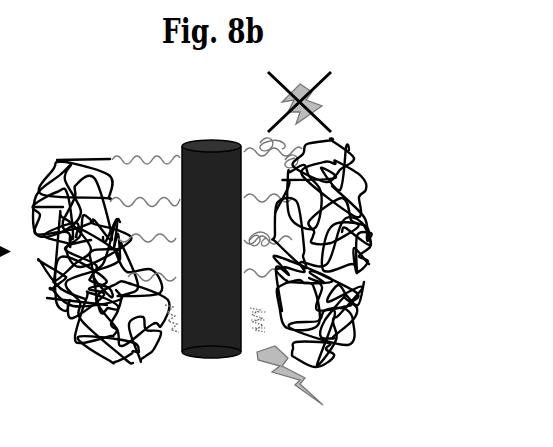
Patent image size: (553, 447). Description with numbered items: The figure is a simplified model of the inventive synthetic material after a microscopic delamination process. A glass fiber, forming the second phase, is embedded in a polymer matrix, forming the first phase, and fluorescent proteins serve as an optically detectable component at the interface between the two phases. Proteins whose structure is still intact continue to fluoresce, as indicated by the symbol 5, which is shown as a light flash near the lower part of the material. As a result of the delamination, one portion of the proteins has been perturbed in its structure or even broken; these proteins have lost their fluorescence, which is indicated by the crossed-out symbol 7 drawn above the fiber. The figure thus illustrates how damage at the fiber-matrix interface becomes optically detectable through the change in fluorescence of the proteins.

The symbol indicating fluorescence 5 is at (310, 381).
The symbol indicating lost fluorescence 7 is at (310, 108).